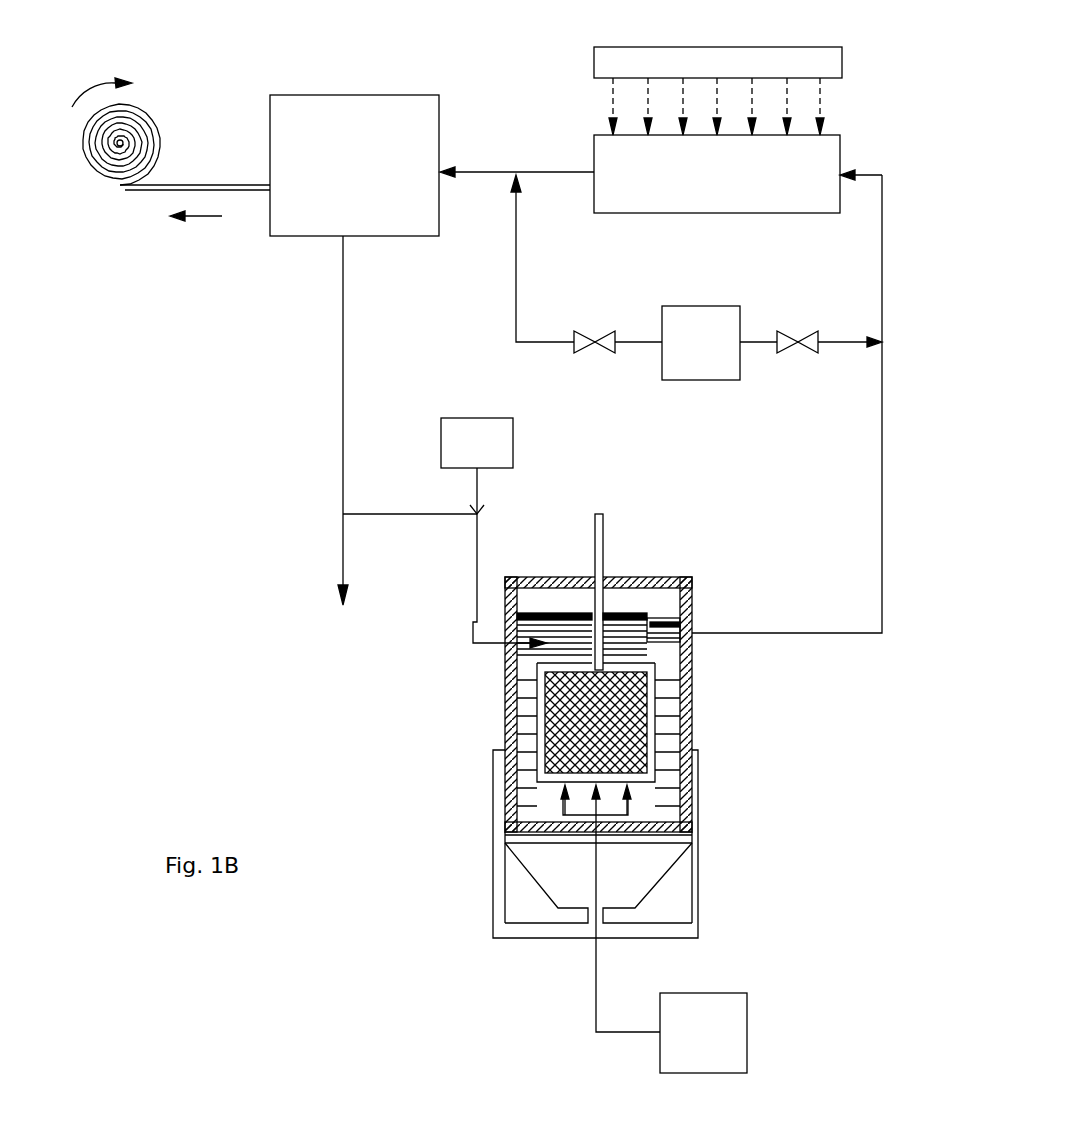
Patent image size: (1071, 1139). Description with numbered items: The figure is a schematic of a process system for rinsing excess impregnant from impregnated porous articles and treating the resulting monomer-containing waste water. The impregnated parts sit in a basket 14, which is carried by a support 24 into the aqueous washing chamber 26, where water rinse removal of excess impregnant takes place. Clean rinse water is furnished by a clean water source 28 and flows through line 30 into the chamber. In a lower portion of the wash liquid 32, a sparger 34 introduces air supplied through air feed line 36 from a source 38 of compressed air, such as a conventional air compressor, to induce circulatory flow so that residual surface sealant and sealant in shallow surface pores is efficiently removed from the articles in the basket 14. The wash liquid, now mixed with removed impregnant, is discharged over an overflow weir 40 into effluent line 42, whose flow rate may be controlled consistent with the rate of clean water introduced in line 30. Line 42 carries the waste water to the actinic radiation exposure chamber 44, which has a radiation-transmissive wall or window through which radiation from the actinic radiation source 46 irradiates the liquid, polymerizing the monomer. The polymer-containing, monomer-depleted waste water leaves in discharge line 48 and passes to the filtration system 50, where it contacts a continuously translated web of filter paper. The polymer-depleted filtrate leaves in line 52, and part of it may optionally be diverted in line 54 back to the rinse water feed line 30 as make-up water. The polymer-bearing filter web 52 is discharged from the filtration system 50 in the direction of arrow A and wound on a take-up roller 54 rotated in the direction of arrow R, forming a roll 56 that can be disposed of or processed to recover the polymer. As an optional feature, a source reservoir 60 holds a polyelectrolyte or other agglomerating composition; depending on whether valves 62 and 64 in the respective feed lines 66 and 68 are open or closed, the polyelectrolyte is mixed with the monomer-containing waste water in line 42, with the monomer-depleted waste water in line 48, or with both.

The arrow R is at (96, 105).
The arrow A is at (213, 218).
The basket 14 is at (628, 725).
The support 24 is at (603, 543).
The aqueous washing chamber 26 is at (505, 690).
The clean water source 28 is at (482, 435).
The rinse water feed line 30 is at (477, 545).
The liquid 32 is at (520, 738).
The sparger 34 is at (630, 812).
The air feed line 36 is at (616, 1037).
The source of compressed air 38 is at (727, 1060).
The overflow weir 40 is at (692, 680).
The effluent line 42 is at (820, 630).
The actinic radiation exposure chamber 44 is at (658, 195).
The actinic radiation source 46 is at (763, 60).
The discharge line 48 is at (530, 168).
The filtration system 50 is at (352, 112).
The filter web 52 is at (157, 188).
The take-up roller 54 is at (110, 153).
The roll 56 is at (160, 132).
The source reservoir 60 is at (687, 373).
The valve 62 is at (595, 332).
The valve 64 is at (792, 332).
The feed line 66 is at (516, 285).
The feed line 68 is at (837, 345).